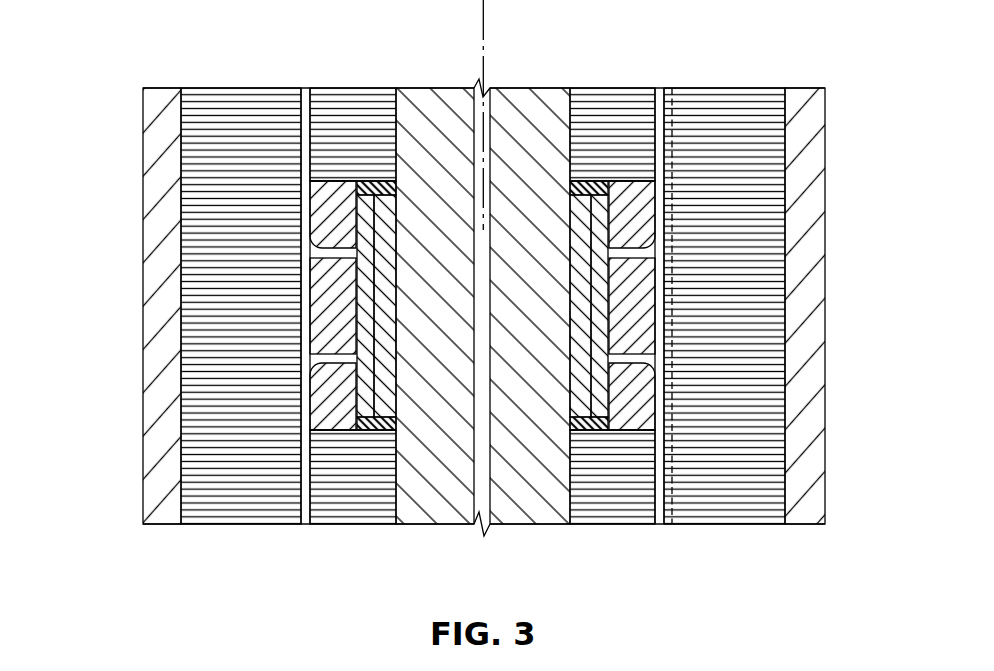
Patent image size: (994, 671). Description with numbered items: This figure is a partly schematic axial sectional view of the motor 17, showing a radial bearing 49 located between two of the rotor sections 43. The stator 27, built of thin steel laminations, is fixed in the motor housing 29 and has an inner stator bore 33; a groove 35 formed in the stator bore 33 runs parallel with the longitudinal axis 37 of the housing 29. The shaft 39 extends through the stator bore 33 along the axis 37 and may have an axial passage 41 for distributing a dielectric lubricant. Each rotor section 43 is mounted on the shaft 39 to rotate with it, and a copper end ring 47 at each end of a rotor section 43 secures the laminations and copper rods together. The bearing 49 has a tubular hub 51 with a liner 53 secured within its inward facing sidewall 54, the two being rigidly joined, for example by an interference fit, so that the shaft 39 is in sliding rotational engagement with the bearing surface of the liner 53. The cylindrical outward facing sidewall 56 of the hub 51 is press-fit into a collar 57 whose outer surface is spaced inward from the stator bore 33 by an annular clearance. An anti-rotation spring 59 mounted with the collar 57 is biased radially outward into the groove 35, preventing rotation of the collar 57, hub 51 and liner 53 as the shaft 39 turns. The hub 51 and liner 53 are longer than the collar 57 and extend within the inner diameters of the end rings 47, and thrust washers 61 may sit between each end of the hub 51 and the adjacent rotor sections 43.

The motor 17 is at (122, 93).
The stator 27 is at (760, 148).
The motor housing 29 is at (825, 332).
The stator bore 33 is at (663, 502).
The groove 35 is at (674, 120).
The longitudinal axis 37 is at (484, 16).
The shaft 39 is at (420, 98).
The axial passage 41 is at (490, 465).
The rotor section 43 is at (310, 487).
The end ring 47 is at (632, 208).
The radial bearing 49 is at (293, 294).
The hub 51 is at (363, 227).
The liner 53 is at (387, 400).
The inward facing sidewall 54 is at (580, 327).
The outward facing sidewall 56 is at (609, 315).
The collar 57 is at (322, 315).
The anti-rotation spring 59 is at (662, 277).
The thrust washer 61 is at (596, 182).